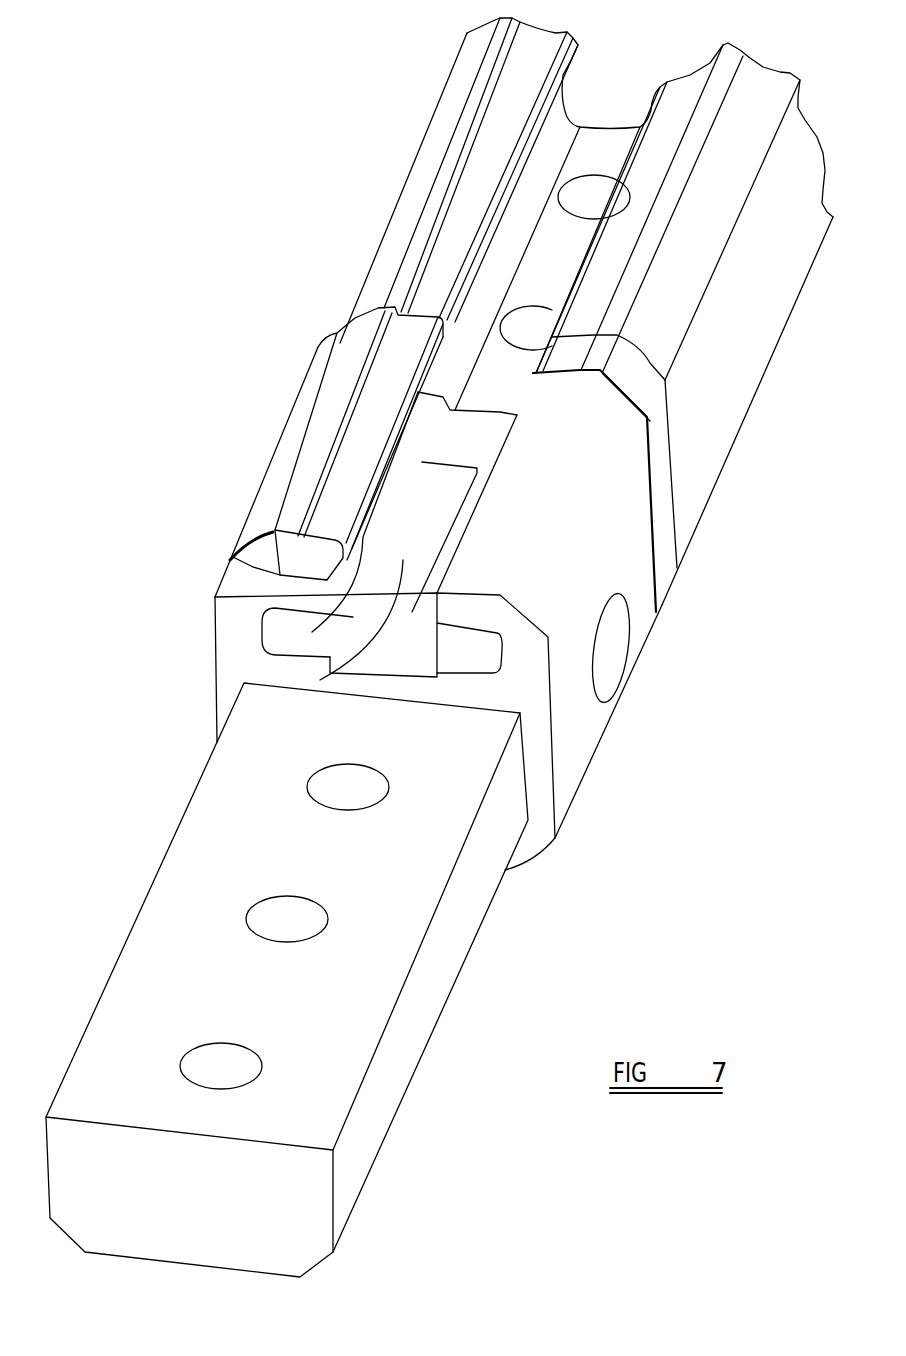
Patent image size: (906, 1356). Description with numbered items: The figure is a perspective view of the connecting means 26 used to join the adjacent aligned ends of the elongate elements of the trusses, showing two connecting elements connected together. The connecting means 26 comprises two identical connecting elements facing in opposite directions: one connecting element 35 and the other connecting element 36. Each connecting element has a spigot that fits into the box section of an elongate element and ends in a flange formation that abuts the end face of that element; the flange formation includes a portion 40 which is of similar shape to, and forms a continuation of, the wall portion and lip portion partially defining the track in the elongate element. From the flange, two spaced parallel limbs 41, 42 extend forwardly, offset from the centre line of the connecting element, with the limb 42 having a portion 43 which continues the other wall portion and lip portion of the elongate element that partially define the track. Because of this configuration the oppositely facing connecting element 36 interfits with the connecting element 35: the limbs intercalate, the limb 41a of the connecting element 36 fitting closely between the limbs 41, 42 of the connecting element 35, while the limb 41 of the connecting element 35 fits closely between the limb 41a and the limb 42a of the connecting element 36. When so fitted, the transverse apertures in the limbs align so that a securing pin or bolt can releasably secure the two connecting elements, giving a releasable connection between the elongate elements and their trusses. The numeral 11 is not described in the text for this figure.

The guide rail 11 is at (704, 470).
The connecting means 26 is at (290, 413).
The connecting element 35 is at (313, 350).
The connecting element 36 is at (597, 769).
The portion of flange formation 40 is at (638, 380).
The limb 41 is at (353, 678).
The limb 41a is at (350, 625).
The limb 42 is at (328, 593).
The limb 42a is at (635, 617).
The portion of limb 43 is at (300, 463).